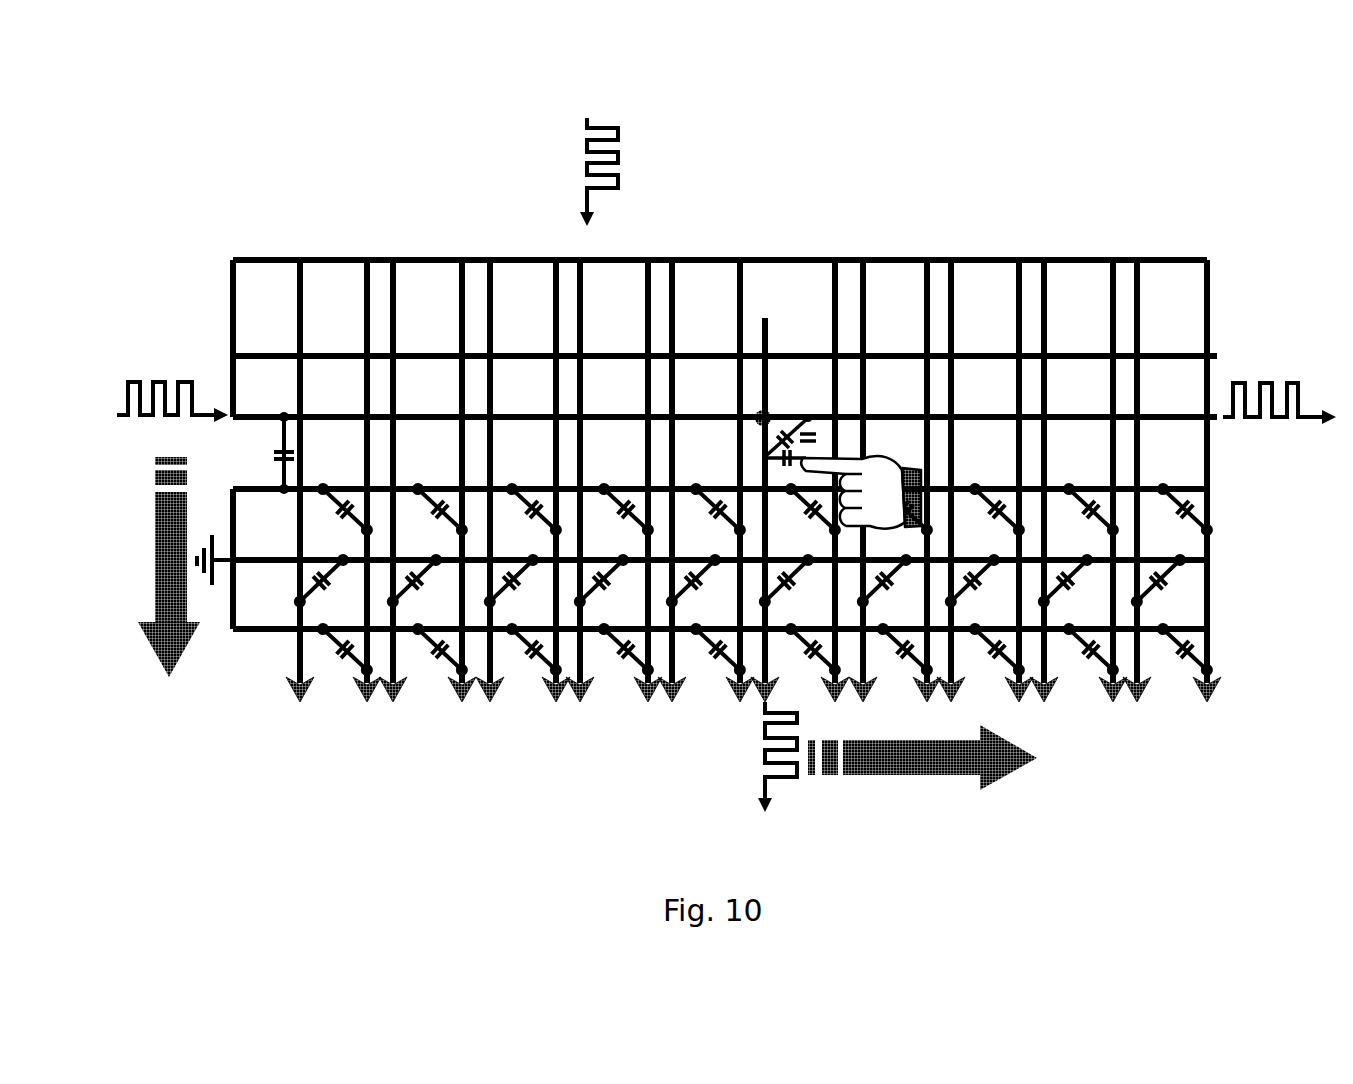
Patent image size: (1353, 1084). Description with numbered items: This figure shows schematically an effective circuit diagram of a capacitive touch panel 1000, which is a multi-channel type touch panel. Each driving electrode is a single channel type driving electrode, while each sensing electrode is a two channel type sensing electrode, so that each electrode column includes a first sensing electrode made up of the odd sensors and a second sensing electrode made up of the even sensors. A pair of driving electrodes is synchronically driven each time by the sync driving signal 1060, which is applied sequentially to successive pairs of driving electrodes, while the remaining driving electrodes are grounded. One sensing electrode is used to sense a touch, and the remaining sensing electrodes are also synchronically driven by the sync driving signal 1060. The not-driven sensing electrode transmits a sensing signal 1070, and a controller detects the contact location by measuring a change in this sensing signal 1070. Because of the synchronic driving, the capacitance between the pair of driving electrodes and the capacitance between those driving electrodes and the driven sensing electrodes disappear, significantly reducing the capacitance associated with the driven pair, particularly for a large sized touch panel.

The capacitive touch panel 1000 is at (1042, 204).
The sync driving signal 1060 is at (186, 382).
The sensing signal 1070 is at (764, 755).